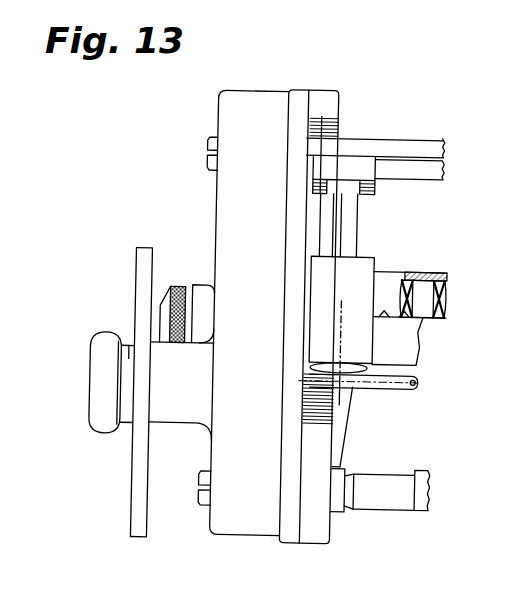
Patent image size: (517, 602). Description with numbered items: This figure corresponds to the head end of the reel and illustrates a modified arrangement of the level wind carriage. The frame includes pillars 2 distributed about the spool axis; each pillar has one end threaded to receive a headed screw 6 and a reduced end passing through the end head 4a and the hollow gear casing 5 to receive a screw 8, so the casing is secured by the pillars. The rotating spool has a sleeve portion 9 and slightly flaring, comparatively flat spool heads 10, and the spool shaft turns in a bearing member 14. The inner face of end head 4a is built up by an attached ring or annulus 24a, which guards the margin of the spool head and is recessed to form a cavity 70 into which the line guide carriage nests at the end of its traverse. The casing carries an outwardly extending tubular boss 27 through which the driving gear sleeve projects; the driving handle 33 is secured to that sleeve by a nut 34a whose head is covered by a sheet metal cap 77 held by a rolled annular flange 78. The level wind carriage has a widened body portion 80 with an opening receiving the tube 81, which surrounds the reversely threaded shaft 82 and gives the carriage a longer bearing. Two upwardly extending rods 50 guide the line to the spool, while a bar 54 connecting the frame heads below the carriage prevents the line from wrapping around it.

The pillars 2 is at (407, 498).
The end head or plate 4a is at (294, 98).
The gear casing 5 is at (244, 108).
The headed screw 6 is at (511, 529).
The screw 8 is at (202, 149).
The sleeve portion 9 is at (398, 345).
The spool heads 10 is at (346, 436).
The bearing member 14 is at (318, 117).
The ring or annulus 24a is at (318, 102).
The tubular boss 27 is at (184, 412).
The driving handle 33 is at (141, 510).
The nut 34a is at (128, 347).
The rods 50 is at (426, 142).
The bar 54 is at (414, 388).
The space or cavity 70 is at (312, 400).
The sheet metal cap 77 is at (113, 382).
The annular flange 78 is at (120, 429).
The body portion of the level wind carriage 80 is at (366, 271).
The tube 81 is at (389, 278).
The reversely threaded shaft 82 is at (422, 298).